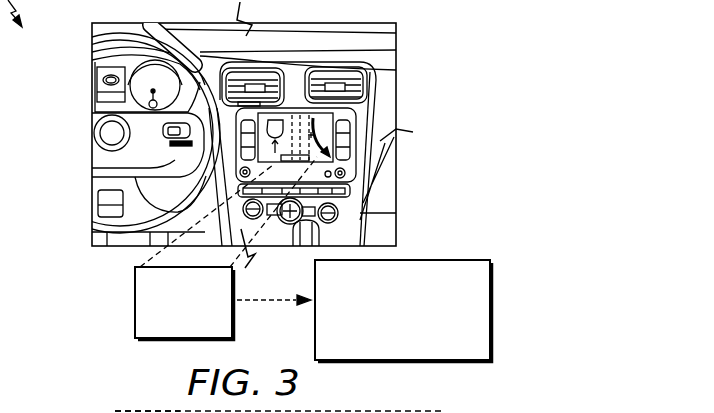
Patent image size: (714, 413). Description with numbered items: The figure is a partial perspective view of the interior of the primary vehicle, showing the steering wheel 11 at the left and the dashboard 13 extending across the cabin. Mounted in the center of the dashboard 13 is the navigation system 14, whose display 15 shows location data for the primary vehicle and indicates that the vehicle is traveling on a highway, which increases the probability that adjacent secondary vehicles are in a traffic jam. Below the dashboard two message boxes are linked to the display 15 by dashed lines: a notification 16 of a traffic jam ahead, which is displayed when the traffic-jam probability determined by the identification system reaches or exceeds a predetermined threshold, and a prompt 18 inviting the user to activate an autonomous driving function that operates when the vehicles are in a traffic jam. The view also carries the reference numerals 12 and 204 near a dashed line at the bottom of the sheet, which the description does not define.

The steering wheel 11 is at (104, 133).
The vehicle 12 is at (172, 407).
The dashboard 13 is at (323, 52).
The navigation system 14 is at (372, 99).
The display 15 is at (217, 180).
The notification 16 is at (133, 301).
The prompt 18 is at (315, 283).
The road 204 is at (123, 381).